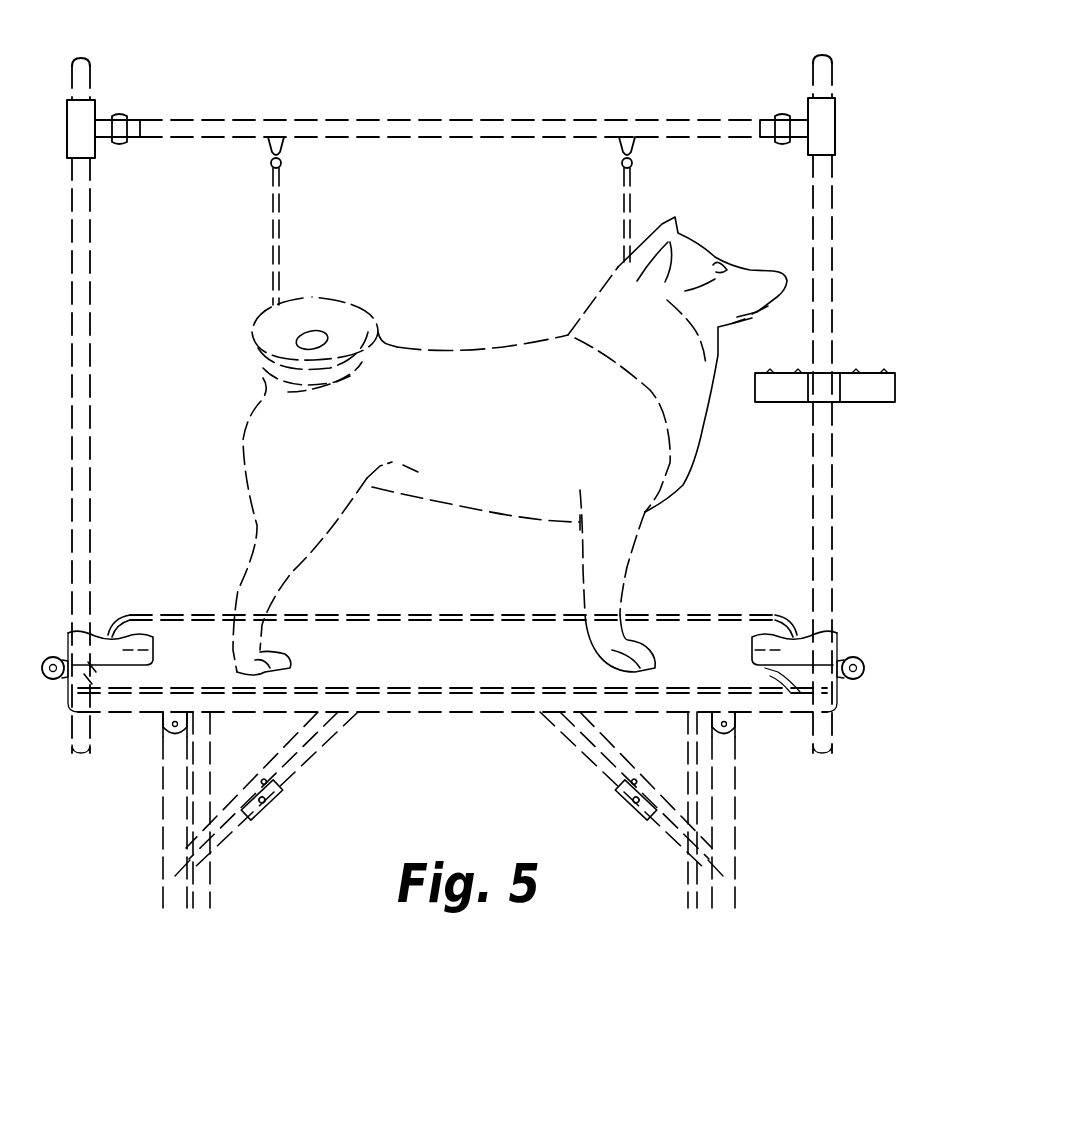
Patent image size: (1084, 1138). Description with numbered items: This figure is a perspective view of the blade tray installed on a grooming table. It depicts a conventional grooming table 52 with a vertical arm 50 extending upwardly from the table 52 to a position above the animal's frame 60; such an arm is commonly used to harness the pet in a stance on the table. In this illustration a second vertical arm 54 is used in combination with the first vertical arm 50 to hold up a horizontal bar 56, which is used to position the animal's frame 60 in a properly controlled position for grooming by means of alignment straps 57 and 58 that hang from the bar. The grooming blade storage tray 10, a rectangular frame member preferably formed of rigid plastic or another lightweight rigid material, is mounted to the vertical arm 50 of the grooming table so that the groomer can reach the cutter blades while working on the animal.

The grooming blade storage tray 10 is at (870, 372).
The vertical arm 50 is at (835, 232).
The grooming table 52 is at (795, 683).
The second vertical arm 54 is at (90, 340).
The horizontal bar 56 is at (656, 115).
The alignment strap 57 is at (632, 202).
The alignment strap 58 is at (283, 212).
The animal's frame 60 is at (492, 362).